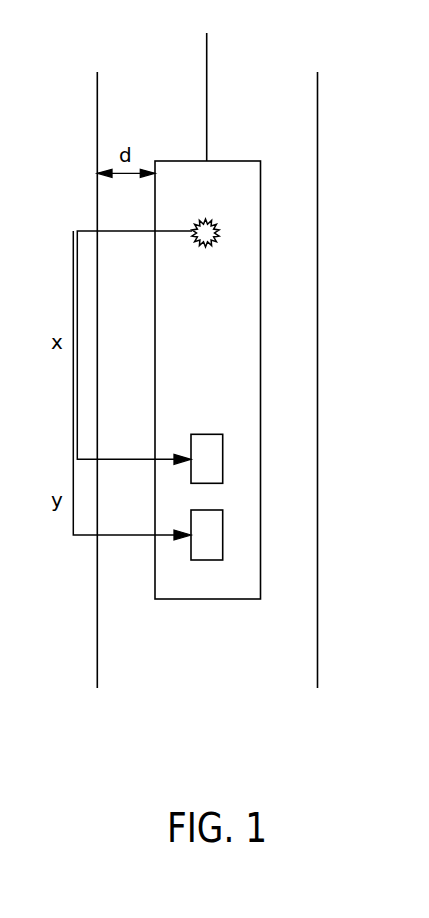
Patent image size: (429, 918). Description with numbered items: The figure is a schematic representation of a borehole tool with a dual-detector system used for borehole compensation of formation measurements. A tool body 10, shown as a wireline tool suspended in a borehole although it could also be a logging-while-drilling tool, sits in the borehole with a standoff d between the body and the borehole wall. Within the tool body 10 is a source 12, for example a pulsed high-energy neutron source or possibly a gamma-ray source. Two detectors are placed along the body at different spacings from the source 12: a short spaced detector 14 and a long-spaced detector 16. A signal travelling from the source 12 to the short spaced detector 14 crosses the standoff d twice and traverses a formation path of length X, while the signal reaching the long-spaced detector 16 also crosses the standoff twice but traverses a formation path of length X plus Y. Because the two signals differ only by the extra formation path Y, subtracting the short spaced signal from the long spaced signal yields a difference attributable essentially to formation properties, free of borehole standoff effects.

The tool body 10 is at (173, 613).
The source 12 is at (234, 234).
The short spaced detector 14 is at (238, 451).
The long-spaced detector 16 is at (238, 544).